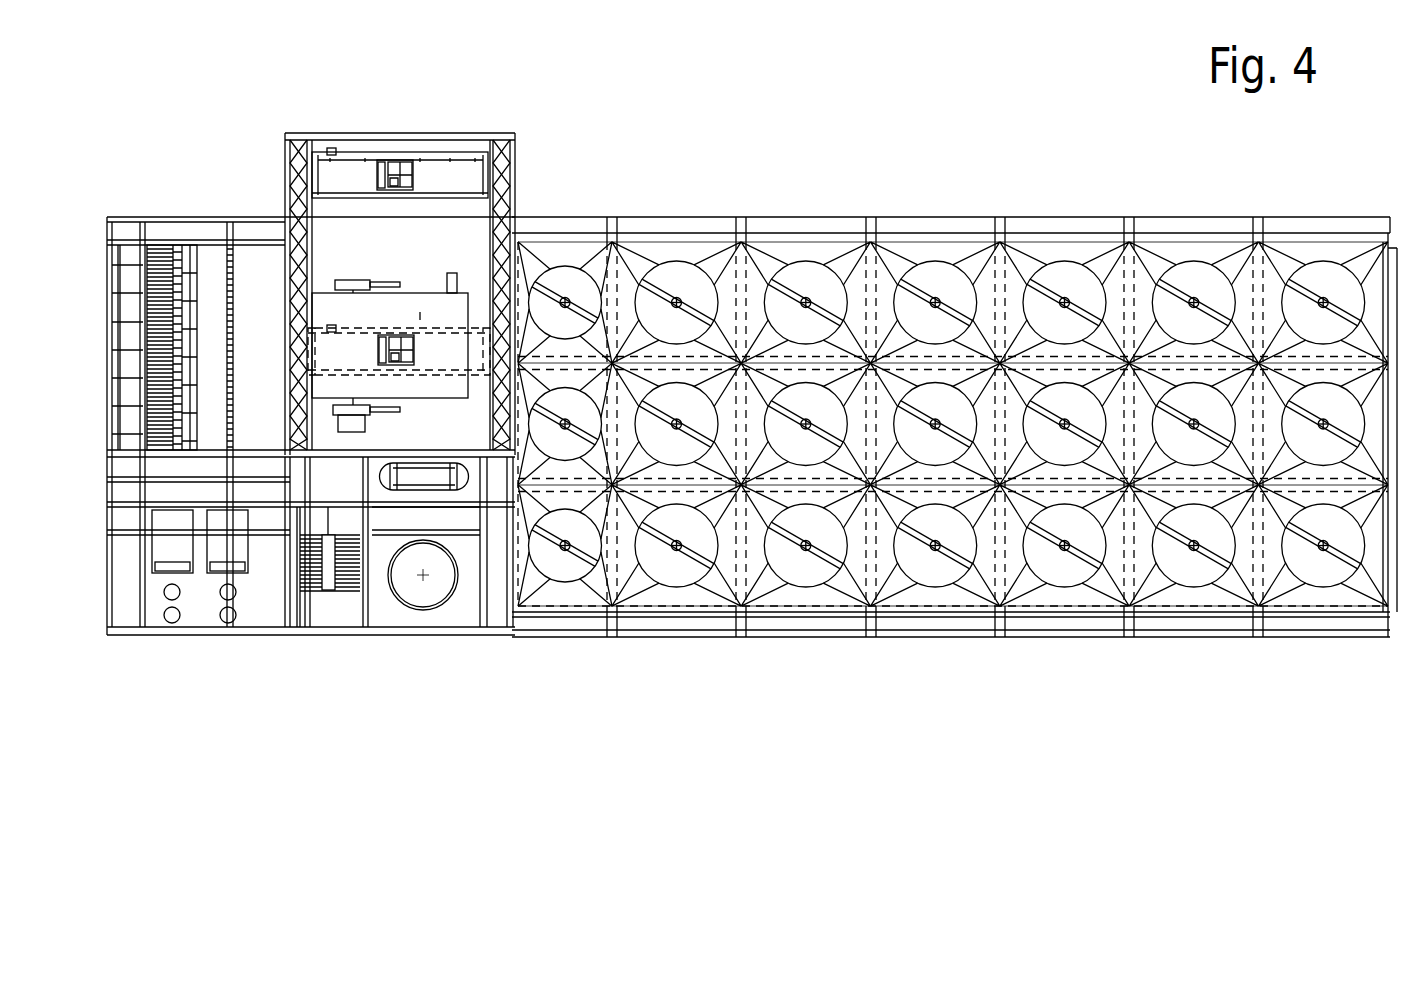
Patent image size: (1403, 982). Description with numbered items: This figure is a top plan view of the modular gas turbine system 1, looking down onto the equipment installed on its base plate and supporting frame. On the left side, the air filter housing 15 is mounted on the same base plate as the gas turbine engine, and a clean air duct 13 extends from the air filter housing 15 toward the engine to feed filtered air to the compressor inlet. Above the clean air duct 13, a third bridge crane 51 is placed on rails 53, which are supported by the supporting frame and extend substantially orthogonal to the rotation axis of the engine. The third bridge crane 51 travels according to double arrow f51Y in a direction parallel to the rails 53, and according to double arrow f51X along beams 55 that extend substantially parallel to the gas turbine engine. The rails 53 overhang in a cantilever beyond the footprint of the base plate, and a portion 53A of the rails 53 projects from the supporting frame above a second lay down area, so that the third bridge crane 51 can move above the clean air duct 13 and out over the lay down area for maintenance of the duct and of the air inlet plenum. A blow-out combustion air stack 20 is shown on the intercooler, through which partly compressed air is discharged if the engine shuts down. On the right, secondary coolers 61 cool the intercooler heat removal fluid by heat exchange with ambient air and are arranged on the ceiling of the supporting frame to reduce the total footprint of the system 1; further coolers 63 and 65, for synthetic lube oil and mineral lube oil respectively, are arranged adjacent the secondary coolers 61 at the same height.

The modular gas turbine system 1 is at (1032, 208).
The clean air duct 13 is at (413, 387).
The air filter housing 15 is at (208, 262).
The blow-out combustion air stack 20 is at (400, 583).
The third bridge crane 51 is at (395, 162).
The rails 53 is at (292, 285).
The portion of the rails 53A is at (528, 132).
The beams 55 is at (352, 195).
The secondary coolers 61 is at (1372, 678).
The further coolers 63 is at (727, 678).
The further coolers 65 is at (603, 678).
The double arrow f51x f51X is at (410, 212).
The double arrow f51y f51Y is at (418, 222).